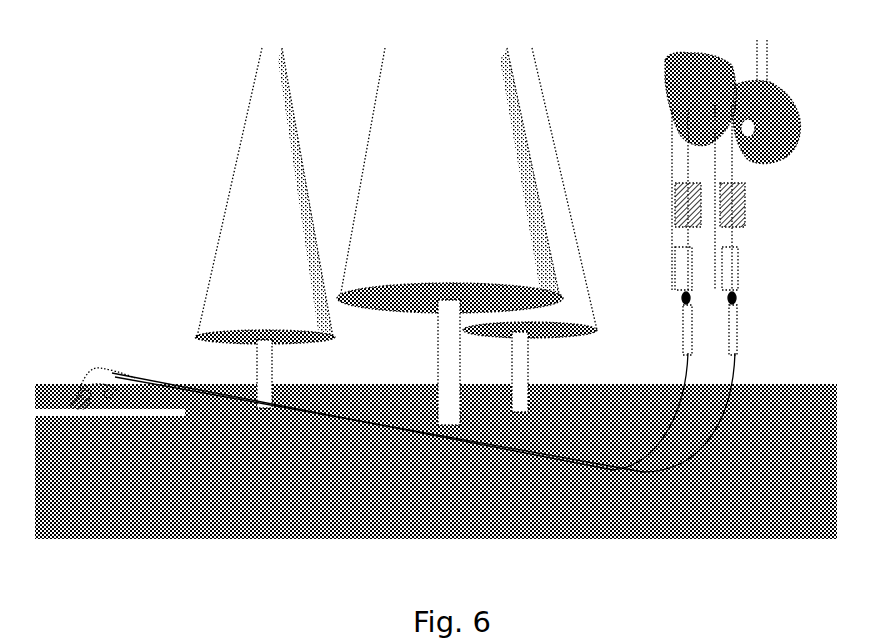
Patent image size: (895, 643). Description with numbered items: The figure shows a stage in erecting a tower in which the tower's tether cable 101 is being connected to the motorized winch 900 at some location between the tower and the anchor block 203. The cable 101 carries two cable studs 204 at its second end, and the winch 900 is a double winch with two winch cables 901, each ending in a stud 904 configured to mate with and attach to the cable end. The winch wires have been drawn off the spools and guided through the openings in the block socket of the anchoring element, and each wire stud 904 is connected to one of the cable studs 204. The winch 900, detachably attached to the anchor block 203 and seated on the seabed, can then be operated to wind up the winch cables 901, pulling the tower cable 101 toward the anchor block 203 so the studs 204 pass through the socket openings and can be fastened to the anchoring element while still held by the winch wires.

The cable 101 is at (767, 70).
The cable studs 204 is at (733, 262).
The stud 904 is at (733, 333).
The winch cable 901 is at (725, 410).
The anchor block 203 is at (74, 363).
The motorized winch 900 is at (83, 392).